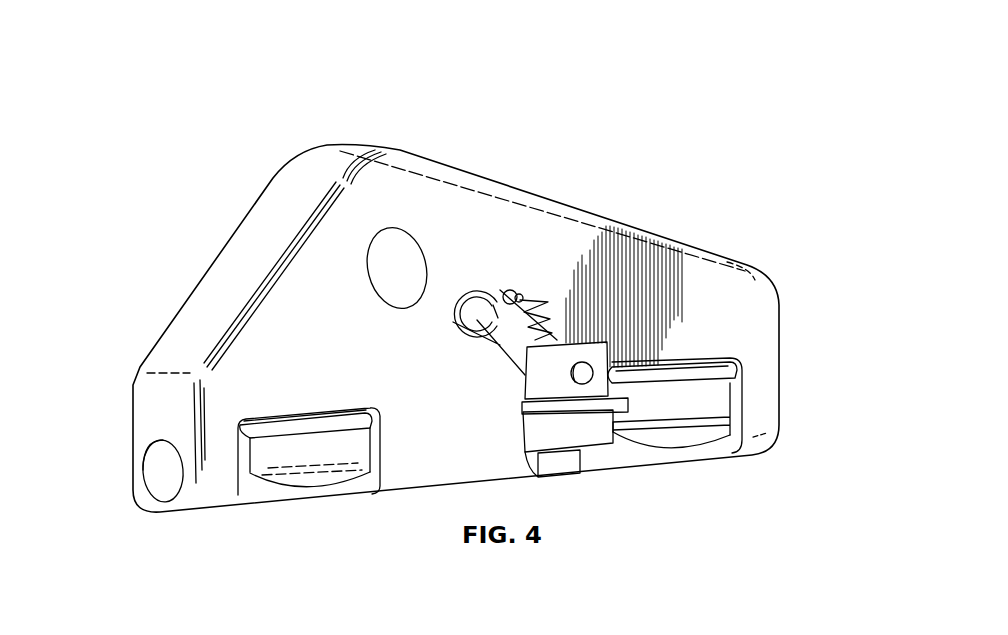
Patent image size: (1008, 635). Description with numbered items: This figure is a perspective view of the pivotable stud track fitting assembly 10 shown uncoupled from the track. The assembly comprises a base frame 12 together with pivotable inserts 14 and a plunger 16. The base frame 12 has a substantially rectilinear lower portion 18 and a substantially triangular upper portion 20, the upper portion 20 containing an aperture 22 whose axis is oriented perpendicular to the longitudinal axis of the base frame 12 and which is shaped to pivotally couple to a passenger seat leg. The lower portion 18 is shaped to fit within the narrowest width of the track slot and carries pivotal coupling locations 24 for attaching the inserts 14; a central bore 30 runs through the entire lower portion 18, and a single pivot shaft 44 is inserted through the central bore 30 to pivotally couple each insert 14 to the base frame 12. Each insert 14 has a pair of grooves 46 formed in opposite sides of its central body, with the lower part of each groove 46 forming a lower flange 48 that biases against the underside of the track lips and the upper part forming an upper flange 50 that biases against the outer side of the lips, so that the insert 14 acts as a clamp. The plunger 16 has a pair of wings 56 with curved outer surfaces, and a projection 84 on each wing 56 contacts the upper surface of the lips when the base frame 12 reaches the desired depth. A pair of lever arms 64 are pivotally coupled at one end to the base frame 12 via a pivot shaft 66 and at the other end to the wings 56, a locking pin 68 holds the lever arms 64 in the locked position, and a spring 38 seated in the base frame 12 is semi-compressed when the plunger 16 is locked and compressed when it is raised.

The pivotable stud track fitting assembly 10 is at (741, 128).
The base frame 12 is at (273, 177).
The pivotable insert 14 is at (267, 482).
The plunger 16 is at (602, 350).
The lower portion 18 is at (233, 400).
The upper portion 20 is at (372, 170).
The aperture 22 is at (389, 262).
The pivotal coupling location 24 is at (313, 410).
The central bore 30 is at (150, 487).
The spring 38 is at (543, 293).
The pivot shaft 44 is at (167, 470).
The grooves 46 is at (340, 450).
The lower flange 48 is at (338, 478).
The upper flange 50 is at (315, 430).
The wings 56 is at (560, 427).
The lever arms 64 is at (500, 340).
The pivot shaft 66 is at (480, 313).
The locking pin 68 is at (513, 293).
The projection 84 is at (582, 403).